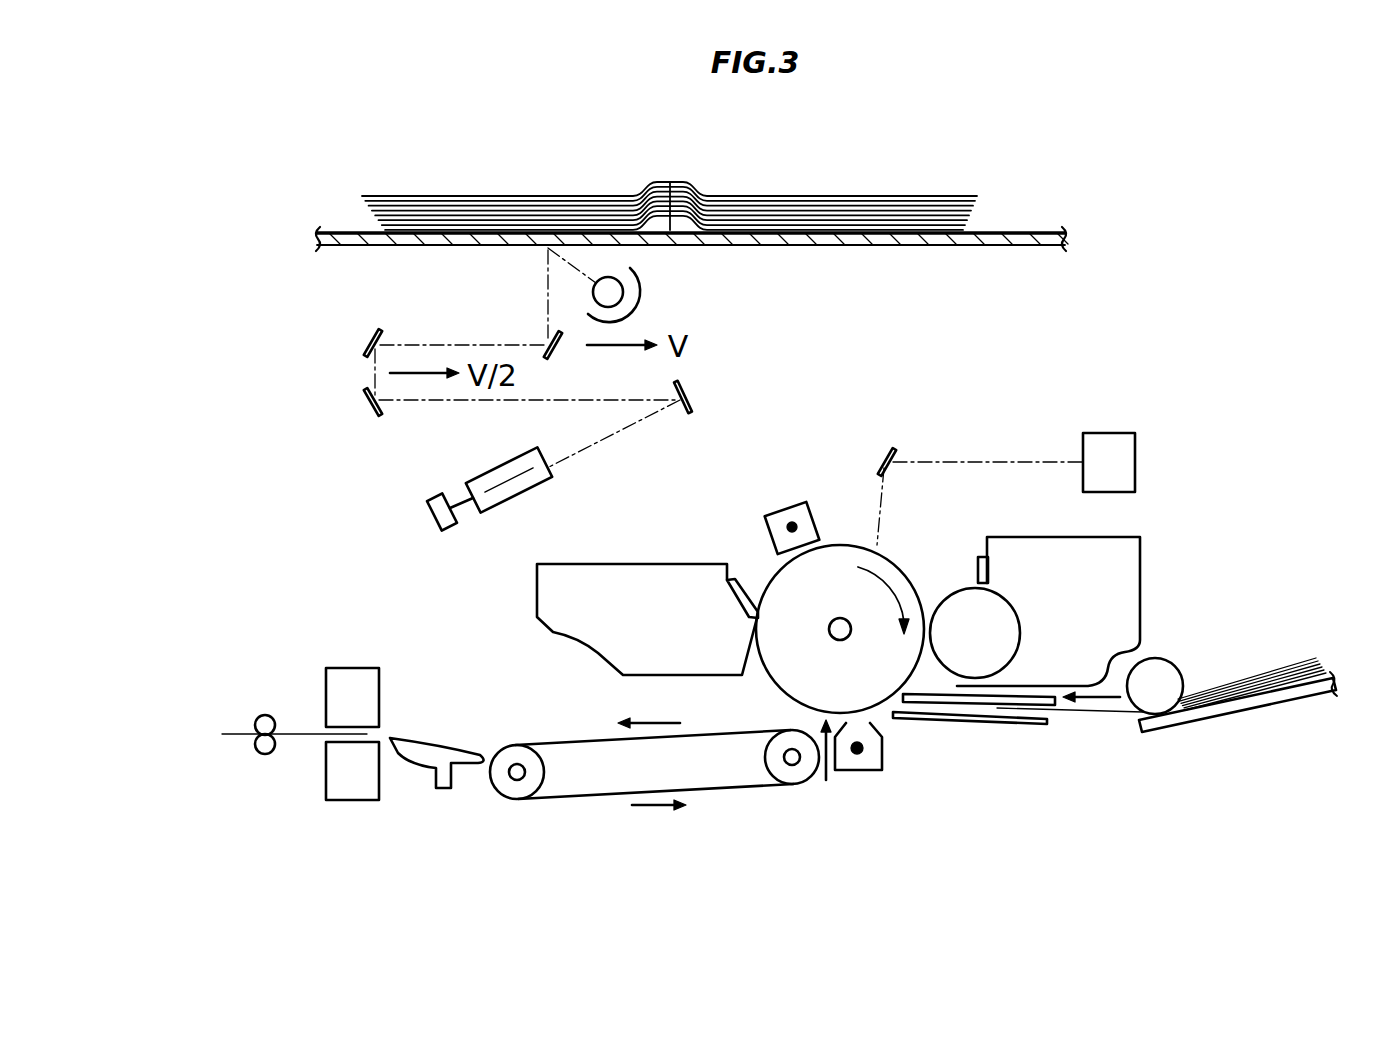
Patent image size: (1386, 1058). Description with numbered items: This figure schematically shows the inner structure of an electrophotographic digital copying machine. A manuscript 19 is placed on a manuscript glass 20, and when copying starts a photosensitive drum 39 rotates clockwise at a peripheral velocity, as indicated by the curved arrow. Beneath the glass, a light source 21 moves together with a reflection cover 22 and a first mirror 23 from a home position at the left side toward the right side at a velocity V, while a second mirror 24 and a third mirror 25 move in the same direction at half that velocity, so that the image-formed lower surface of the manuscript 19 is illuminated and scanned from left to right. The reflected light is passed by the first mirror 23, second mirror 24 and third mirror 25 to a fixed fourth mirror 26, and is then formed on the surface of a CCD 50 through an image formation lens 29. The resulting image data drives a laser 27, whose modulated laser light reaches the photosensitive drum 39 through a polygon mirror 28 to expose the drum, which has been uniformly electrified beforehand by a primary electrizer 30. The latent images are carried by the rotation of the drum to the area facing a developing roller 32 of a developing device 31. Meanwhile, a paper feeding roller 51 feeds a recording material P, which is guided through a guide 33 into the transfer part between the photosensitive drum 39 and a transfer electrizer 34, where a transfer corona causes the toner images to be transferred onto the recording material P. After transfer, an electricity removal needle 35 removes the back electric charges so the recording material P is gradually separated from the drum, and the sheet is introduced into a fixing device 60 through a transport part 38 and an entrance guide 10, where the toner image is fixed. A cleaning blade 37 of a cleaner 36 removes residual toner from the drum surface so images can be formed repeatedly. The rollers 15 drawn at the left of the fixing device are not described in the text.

The entrance guide 10 is at (453, 766).
The feed rollers 15 is at (262, 753).
The manuscript 19 is at (762, 200).
The manuscript glass 20 is at (791, 237).
The light source 21 is at (624, 290).
The reflection cover 22 is at (641, 297).
The first mirror 23 is at (560, 355).
The second mirror 24 is at (368, 335).
The third mirror 25 is at (368, 410).
The fourth mirror 26 is at (700, 403).
The laser 27 is at (1135, 465).
The polygon mirror 28 is at (893, 450).
The image formation lens 29 is at (488, 478).
The primary electrizer 30 is at (785, 503).
The developing device 31 is at (1142, 620).
The developing roller 32 is at (1018, 615).
The guide 33 is at (970, 720).
The transfer electrizer 34 is at (870, 772).
The electricity removal needle 35 is at (826, 785).
The cleaner 36 is at (614, 562).
The cleaning blade 37 is at (722, 592).
The transport part 38 is at (708, 740).
The photosensitive drum 39 is at (897, 562).
The CCD 50 is at (430, 500).
The paper feeding roller 51 is at (1175, 660).
The fixing device 60 is at (368, 668).
The recording material P is at (1080, 712).